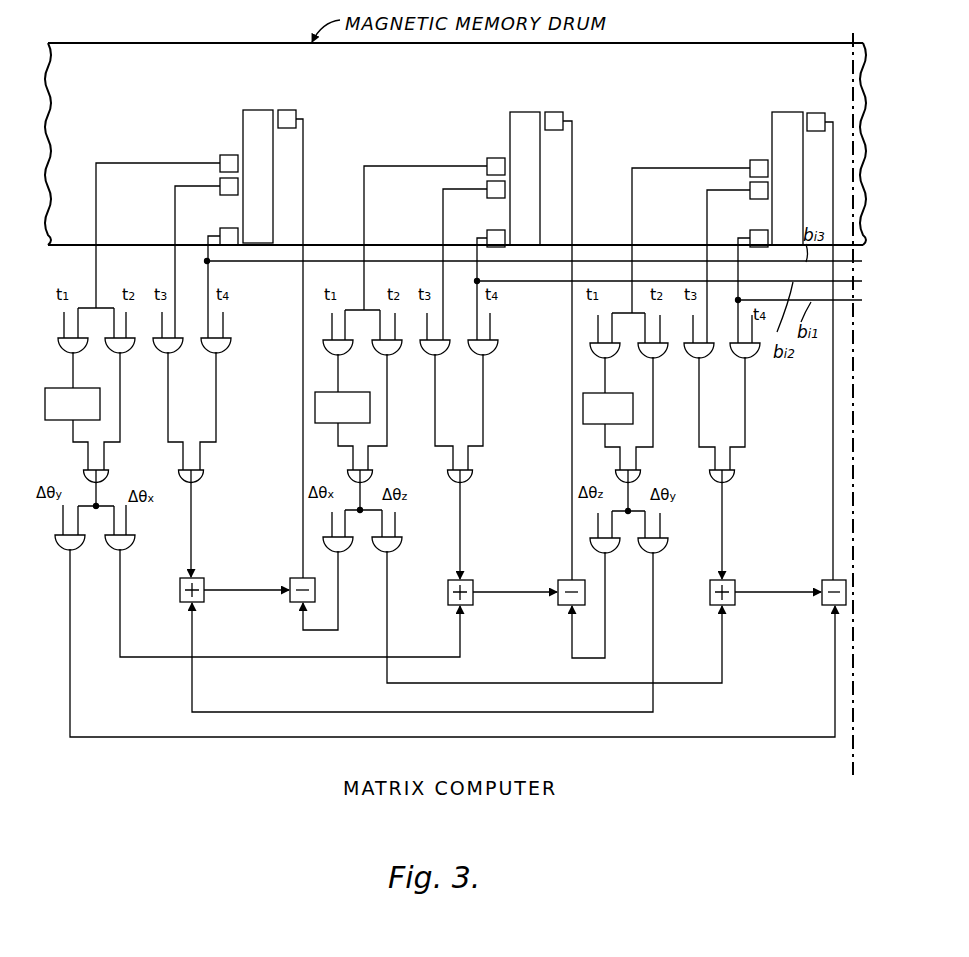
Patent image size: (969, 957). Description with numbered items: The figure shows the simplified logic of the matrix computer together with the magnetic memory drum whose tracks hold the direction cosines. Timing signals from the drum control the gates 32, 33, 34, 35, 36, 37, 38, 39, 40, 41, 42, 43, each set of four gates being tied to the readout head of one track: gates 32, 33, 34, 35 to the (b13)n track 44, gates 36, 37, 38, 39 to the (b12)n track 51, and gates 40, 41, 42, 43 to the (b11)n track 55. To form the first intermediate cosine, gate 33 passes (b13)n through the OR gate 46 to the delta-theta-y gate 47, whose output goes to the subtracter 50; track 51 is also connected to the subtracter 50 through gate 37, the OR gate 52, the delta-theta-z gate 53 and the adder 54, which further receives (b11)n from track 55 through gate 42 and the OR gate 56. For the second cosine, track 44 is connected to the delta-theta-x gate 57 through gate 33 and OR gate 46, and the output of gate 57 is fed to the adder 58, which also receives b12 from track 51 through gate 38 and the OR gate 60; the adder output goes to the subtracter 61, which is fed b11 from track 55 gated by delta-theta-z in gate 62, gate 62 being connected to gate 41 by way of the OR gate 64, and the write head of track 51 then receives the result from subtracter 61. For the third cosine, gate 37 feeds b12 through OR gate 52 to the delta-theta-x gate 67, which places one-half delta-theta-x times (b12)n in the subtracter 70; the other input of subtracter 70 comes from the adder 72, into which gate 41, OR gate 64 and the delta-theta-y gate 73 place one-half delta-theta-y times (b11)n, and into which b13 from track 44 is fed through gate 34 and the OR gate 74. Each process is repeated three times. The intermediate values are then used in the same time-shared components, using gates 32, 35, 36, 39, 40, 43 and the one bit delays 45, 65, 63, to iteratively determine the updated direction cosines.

The (b13)n track 44 is at (249, 110).
The (b12)n track 51 is at (519, 112).
The (b11)n track 55 is at (783, 112).
The gate 32 is at (81, 350).
The gate 33 is at (128, 350).
The gate 34 is at (176, 350).
The gate 35 is at (224, 350).
The gate 36 is at (346, 352).
The gate 37 is at (395, 352).
The gate 38 is at (443, 352).
The gate 39 is at (491, 352).
The gate 40 is at (613, 355).
The gate 41 is at (661, 355).
The gate 42 is at (707, 355).
The gate 43 is at (753, 355).
The 1 bit delay 45 is at (52, 422).
The 1 bit delay 65 is at (322, 425).
The 1 bit delay 63 is at (590, 426).
The OR gate 46 is at (109, 477).
The OR gate 74 is at (204, 477).
The OR gate 52 is at (373, 477).
The OR gate 60 is at (470, 481).
The OR gate 64 is at (641, 477).
The OR gate 56 is at (735, 478).
The delta-theta-y gate 47 is at (77, 548).
The delta-theta-x gate 57 is at (128, 548).
The delta-theta-x gate 67 is at (345, 550).
The delta-theta-z gate 53 is at (395, 550).
The delta-theta-z gate 62 is at (613, 551).
The delta-theta-y gate 73 is at (661, 551).
The adder 72 is at (178, 598).
The subtracter 70 is at (289, 605).
The adder 58 is at (447, 606).
The subtracter 61 is at (557, 606).
The adder 54 is at (709, 606).
The subtracter 50 is at (821, 606).